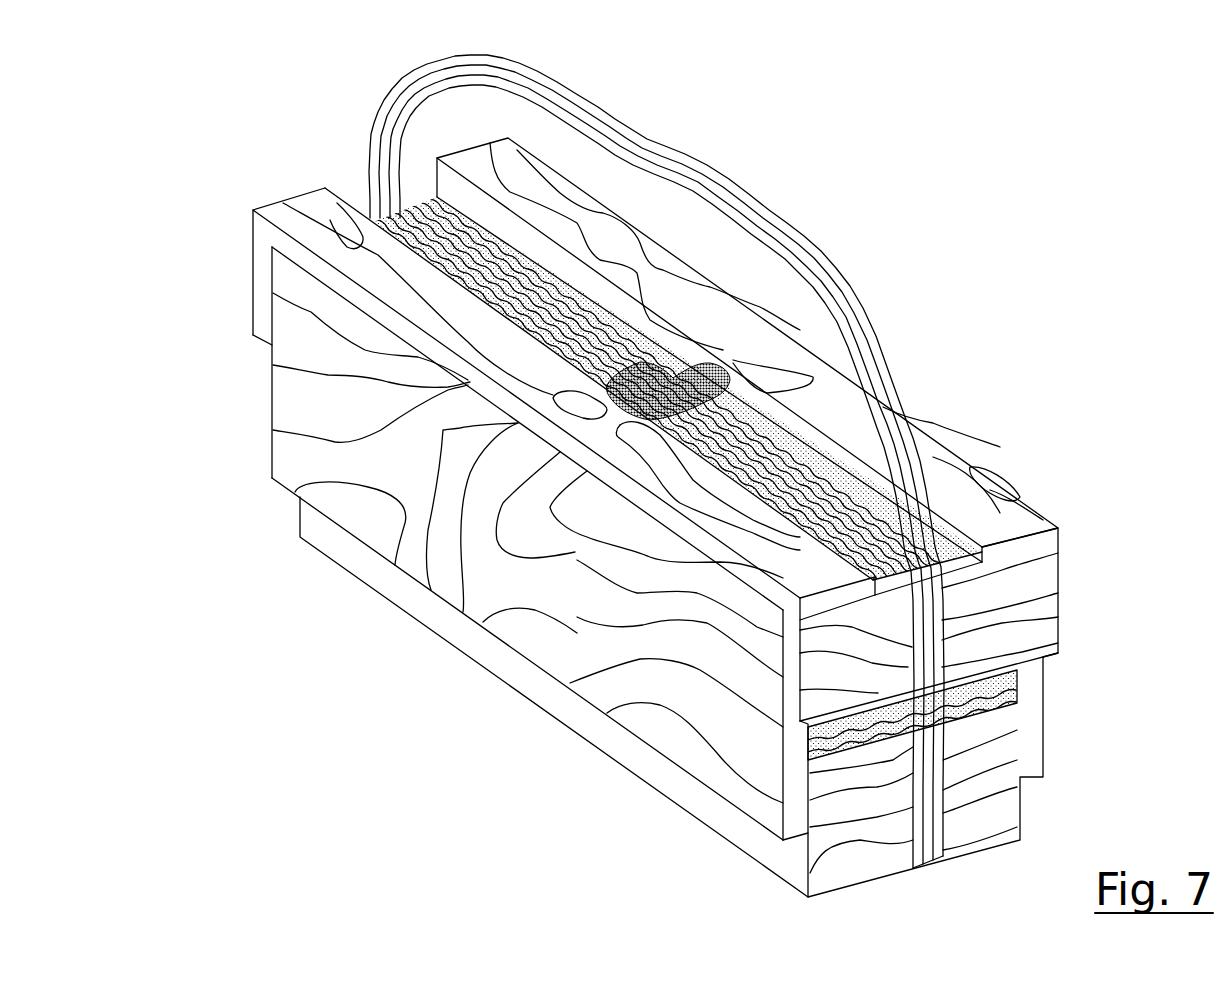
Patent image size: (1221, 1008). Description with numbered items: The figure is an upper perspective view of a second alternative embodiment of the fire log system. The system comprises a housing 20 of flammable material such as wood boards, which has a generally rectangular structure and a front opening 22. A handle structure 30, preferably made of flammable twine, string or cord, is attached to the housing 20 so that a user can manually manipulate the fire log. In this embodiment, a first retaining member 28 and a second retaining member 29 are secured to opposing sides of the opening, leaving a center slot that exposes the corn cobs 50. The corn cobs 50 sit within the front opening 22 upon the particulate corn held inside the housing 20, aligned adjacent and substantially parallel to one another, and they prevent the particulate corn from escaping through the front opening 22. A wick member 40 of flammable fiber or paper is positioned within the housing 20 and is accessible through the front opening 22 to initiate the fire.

The housing 20 is at (365, 523).
The front opening 22 is at (975, 472).
The first retaining member 28 is at (866, 584).
The second retaining member 29 is at (1008, 513).
The handle structure 30 is at (880, 353).
The wick member 40 is at (683, 370).
The corn cobs 50 is at (857, 512).